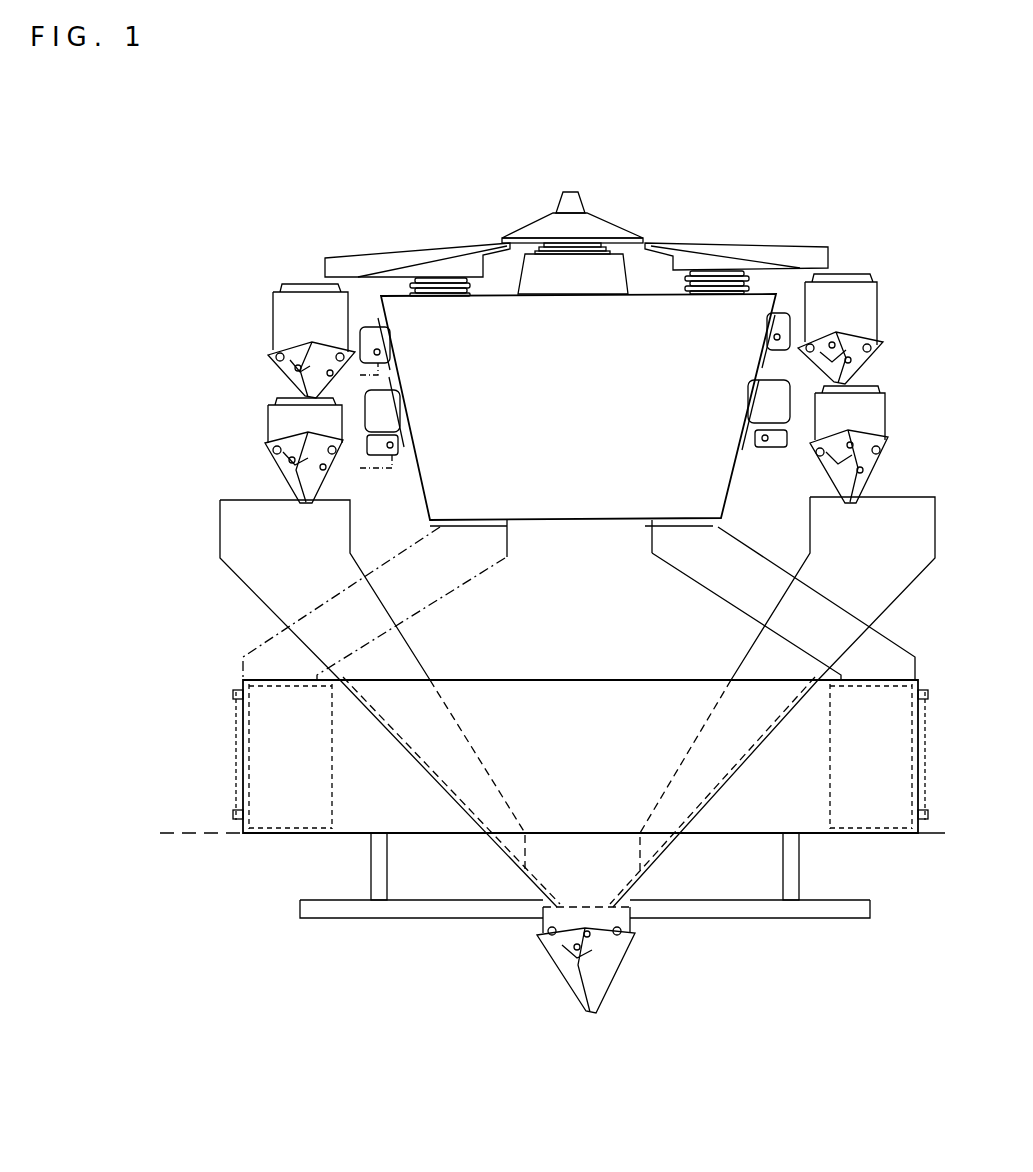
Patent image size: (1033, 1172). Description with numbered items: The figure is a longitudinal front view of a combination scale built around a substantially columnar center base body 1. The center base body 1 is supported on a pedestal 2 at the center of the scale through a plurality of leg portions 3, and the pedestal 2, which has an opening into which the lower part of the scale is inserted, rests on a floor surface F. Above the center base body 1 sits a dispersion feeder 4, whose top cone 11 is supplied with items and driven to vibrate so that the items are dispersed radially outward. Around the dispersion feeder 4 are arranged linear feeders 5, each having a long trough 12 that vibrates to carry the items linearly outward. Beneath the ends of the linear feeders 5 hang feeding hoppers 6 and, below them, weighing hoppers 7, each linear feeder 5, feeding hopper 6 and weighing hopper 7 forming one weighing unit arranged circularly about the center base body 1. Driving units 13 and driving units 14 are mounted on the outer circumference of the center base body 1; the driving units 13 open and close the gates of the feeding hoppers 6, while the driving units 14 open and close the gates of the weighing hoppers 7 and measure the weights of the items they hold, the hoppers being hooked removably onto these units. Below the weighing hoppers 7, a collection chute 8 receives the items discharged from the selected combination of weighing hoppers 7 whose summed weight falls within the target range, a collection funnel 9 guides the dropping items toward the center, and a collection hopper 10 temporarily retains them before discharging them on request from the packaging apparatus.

The center base body 1 is at (569, 519).
The pedestal 2 is at (620, 677).
The leg portions 3 is at (440, 600).
The dispersion feeder 4 is at (606, 221).
The linear feeders 5 is at (375, 256).
The feeding hoppers 6 is at (273, 320).
The weighing hoppers 7 is at (268, 427).
The collection chute 8 is at (252, 597).
The collection funnel 9 is at (535, 885).
The collection hopper 10 is at (613, 968).
The top cone 11 is at (540, 236).
The trough 12 is at (434, 258).
The driving units 13 is at (391, 337).
The driving units 14 is at (410, 410).
The floor surface F is at (219, 833).